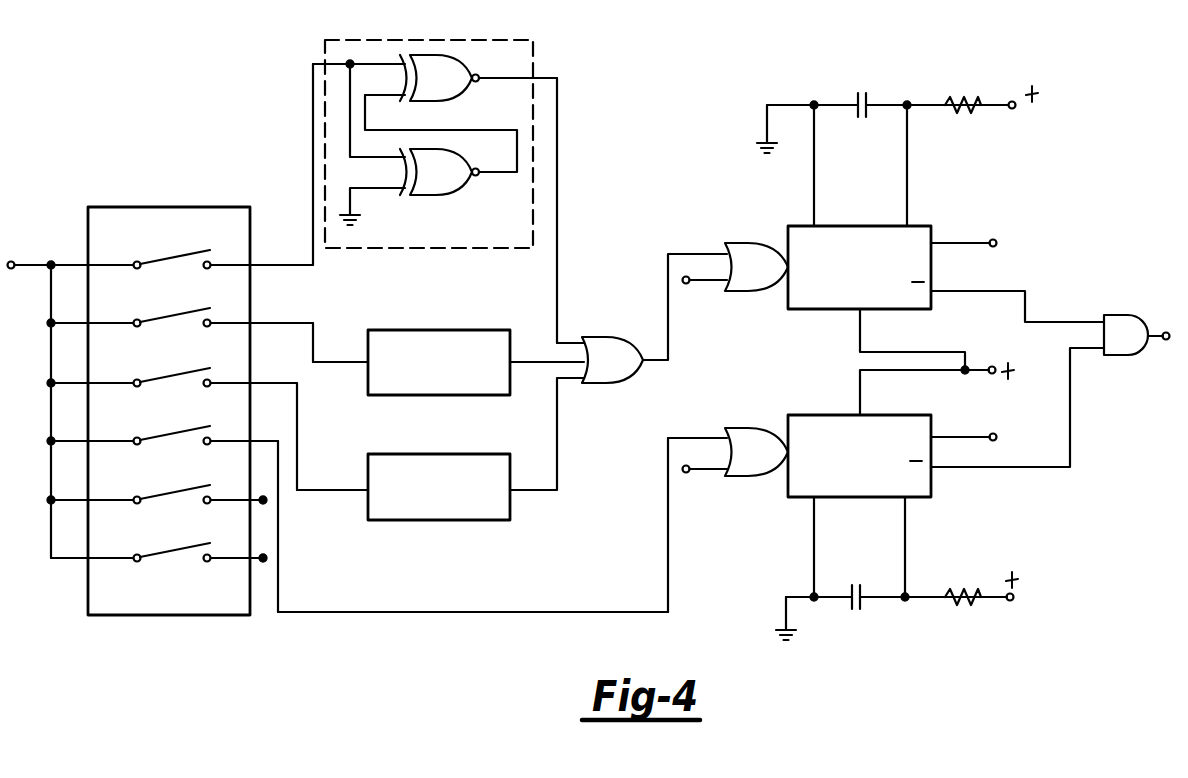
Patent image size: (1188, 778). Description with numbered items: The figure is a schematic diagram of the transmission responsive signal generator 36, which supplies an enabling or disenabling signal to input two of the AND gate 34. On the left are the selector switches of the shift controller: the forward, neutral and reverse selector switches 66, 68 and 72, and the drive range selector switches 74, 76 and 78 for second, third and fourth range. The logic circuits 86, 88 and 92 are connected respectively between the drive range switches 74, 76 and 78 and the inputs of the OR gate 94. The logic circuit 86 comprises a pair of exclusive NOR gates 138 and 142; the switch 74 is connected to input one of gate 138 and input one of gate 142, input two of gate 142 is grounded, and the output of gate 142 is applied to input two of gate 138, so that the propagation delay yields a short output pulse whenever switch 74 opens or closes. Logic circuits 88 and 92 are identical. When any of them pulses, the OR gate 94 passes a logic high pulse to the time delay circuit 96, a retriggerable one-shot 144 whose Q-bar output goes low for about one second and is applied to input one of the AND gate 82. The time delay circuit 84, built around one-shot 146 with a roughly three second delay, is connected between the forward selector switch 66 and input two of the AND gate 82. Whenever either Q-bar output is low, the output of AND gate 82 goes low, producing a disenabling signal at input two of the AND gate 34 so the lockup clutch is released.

The AND gate 34 is at (1158, 361).
The transmission responsive signal generator 36 is at (394, 172).
The forward selector switch 66 is at (193, 428).
The neutral selector switch 68 is at (193, 487).
The reverse selector switch 72 is at (193, 545).
The drive range selector switch 74 is at (193, 252).
The drive range selector switch 76 is at (193, 310).
The drive range selector switch 78 is at (193, 370).
The AND gate 82 is at (1140, 326).
The time delay circuit 84 is at (786, 410).
The logic circuit 86 is at (394, 172).
The logic circuit 88 is at (462, 330).
The logic circuit 92 is at (452, 432).
The OR gate 94 is at (620, 336).
The time delay circuit 96 is at (779, 218).
The exclusive NOR gate 138 is at (456, 55).
The exclusive NOR gate 142 is at (424, 200).
The one-shot 144 is at (868, 202).
The one-shot 146 is at (905, 415).